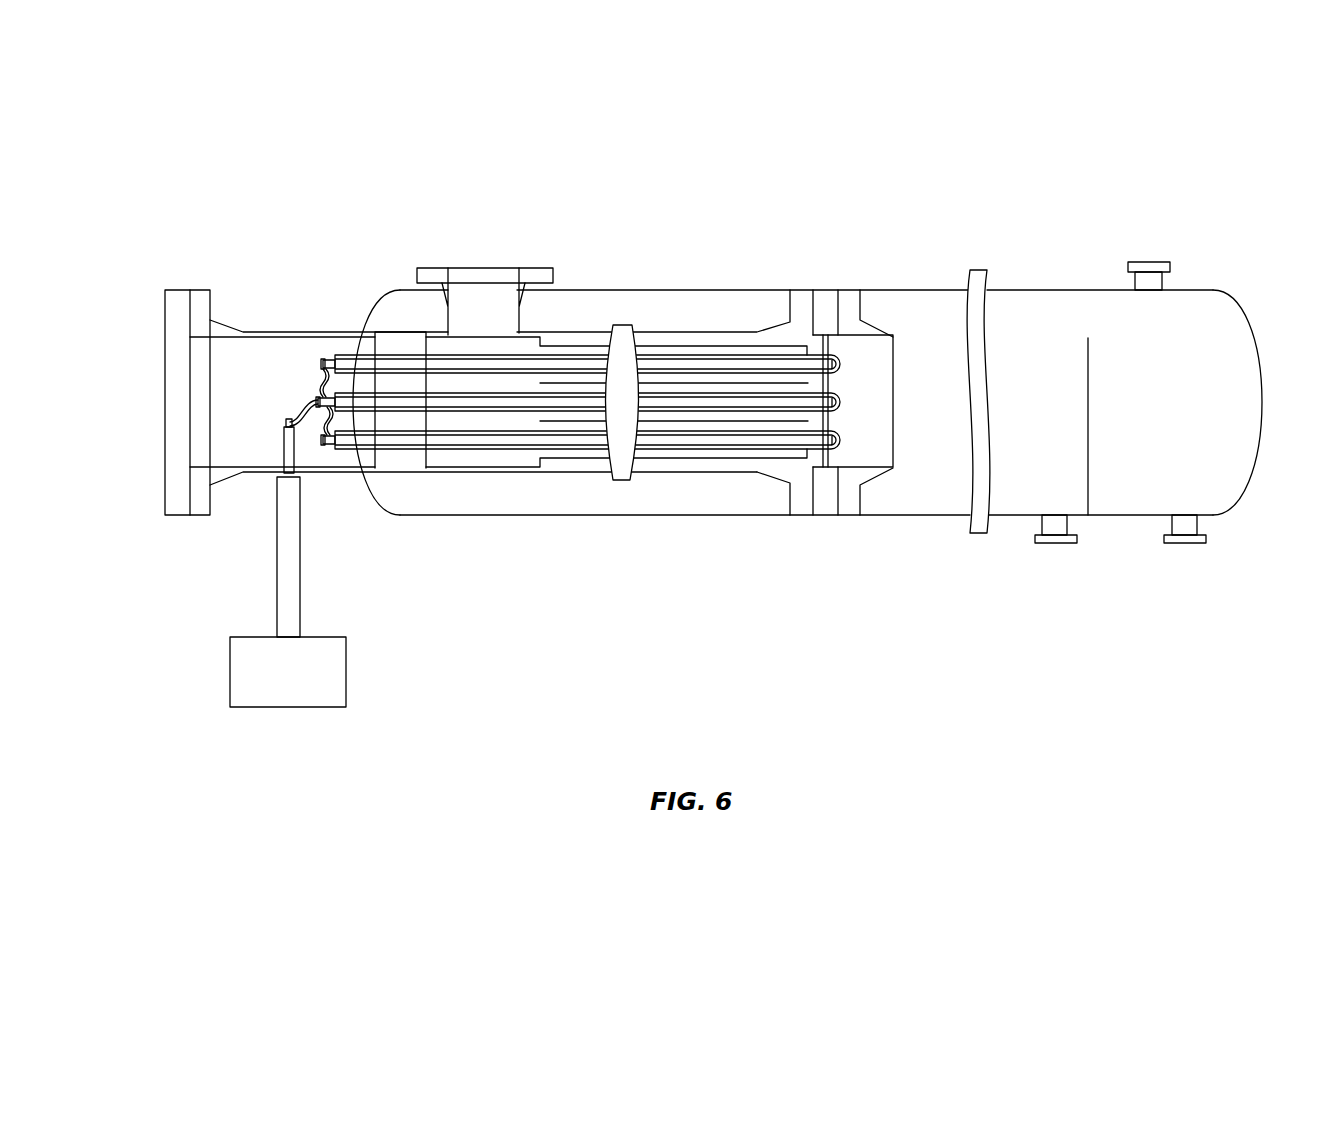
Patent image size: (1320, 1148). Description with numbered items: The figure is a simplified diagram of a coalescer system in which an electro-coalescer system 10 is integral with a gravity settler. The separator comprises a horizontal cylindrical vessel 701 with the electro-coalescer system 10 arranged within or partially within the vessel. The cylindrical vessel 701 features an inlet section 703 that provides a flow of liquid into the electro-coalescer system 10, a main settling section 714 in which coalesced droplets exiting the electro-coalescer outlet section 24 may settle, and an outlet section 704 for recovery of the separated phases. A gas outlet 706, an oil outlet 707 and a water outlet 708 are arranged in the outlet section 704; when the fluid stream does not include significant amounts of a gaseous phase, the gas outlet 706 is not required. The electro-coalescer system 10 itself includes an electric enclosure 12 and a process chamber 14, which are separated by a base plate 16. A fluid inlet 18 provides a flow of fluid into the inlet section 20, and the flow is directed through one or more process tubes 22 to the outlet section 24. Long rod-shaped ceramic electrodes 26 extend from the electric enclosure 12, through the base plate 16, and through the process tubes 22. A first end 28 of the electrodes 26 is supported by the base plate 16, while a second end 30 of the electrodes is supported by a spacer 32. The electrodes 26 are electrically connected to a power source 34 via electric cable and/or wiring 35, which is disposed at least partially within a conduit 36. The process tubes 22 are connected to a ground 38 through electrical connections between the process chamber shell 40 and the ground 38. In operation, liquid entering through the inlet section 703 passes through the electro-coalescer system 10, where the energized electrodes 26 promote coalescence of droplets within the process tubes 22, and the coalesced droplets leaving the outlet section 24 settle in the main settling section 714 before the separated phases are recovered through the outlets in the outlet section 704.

The electro-coalescer system 10 is at (600, 240).
The electric enclosure 12 is at (201, 289).
The process chamber 14 is at (654, 318).
The base plate 16 is at (400, 463).
The fluid inlet 18 is at (438, 268).
The inlet section 20 is at (463, 420).
The process tubes 22 is at (568, 460).
The outlet section 24 is at (882, 397).
The ceramic electrodes 26 is at (517, 447).
The first end 28 is at (350, 357).
The second end 30 is at (730, 355).
The spacer 32 is at (832, 419).
The power source 34 is at (347, 670).
The electric cable and/or wiring 35 is at (312, 420).
The conduit 36 is at (302, 555).
The ground 38 is at (912, 516).
The process chamber shell 40 is at (685, 332).
The horizontal cylindrical vessel 701 is at (928, 290).
The inlet section 703 is at (450, 222).
The outlet section 704 is at (1070, 243).
The gas outlet 706 is at (1150, 262).
The oil outlet 707 is at (1190, 543).
The water outlet 708 is at (1060, 543).
The main settling section 714 is at (876, 243).